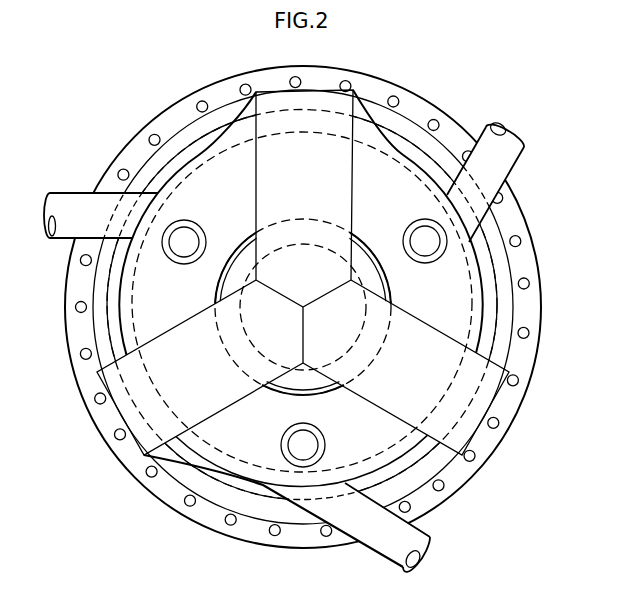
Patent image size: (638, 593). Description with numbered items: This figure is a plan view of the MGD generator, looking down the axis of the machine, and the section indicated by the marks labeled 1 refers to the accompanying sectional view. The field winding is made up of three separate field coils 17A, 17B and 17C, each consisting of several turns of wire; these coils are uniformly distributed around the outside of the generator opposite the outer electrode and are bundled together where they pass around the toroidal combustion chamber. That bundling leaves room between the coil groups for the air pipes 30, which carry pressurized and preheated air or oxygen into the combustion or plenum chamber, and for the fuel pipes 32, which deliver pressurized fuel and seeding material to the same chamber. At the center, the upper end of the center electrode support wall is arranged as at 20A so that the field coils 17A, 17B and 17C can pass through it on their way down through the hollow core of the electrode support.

The field coil 17A is at (121, 385).
The field coil 17B is at (328, 95).
The field coil 17C is at (490, 402).
The arrangement at upper end of center electrode support wall 20A is at (240, 269).
The pipes 30 is at (75, 212).
The pipes 32 is at (183, 223).
The section line for FIG. 1 is at (518, 113).